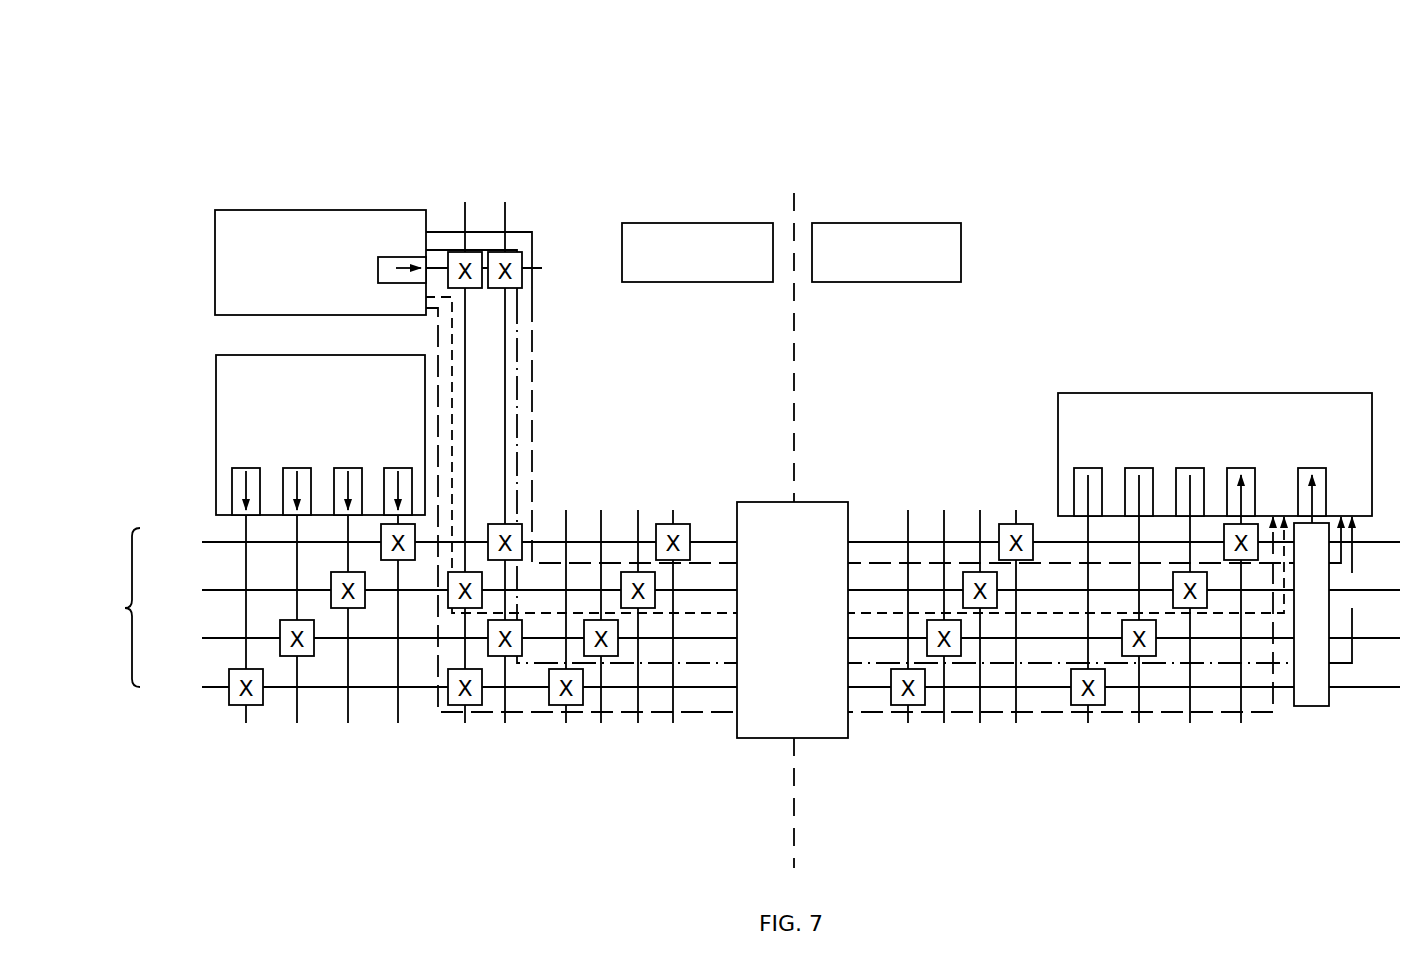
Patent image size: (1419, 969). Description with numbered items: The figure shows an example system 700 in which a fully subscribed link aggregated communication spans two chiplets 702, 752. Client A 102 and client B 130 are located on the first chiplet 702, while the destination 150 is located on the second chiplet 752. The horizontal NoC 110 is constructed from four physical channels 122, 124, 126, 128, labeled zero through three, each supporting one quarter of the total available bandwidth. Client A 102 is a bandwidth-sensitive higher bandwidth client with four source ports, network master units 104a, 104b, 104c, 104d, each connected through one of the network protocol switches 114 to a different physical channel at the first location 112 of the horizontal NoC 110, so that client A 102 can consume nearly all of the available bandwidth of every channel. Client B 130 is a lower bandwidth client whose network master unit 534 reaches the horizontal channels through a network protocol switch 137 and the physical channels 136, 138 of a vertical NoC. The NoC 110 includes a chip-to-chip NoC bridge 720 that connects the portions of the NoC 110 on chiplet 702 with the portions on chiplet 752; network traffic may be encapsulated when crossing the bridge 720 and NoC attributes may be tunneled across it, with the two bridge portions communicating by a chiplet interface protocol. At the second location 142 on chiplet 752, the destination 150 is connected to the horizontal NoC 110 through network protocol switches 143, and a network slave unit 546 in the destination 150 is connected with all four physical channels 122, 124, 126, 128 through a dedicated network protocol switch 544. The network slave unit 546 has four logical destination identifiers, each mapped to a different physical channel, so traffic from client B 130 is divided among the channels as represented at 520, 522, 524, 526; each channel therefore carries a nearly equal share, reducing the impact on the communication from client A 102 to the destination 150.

The system 700 is at (230, 68).
The chiplet 702 is at (265, 148).
The chiplet 752 is at (935, 148).
The client B 130 is at (388, 209).
The network master unit 534 is at (378, 267).
The physical channel 136 is at (465, 208).
The physical channel 138 is at (506, 208).
The network protocol switch 137 is at (470, 288).
The traffic 520 is at (452, 330).
The traffic 522 is at (438, 697).
The traffic 524 is at (532, 428).
The traffic 526 is at (517, 463).
The client A 102 is at (216, 383).
The network master unit 104a is at (246, 468).
The network master unit 104b is at (297, 468).
The network master unit 104c is at (346, 468).
The network master unit 104d is at (398, 468).
The horizontal NoC 110 is at (110, 607).
The physical channel 122 is at (222, 545).
The physical channel 124 is at (222, 593).
The physical channel 126 is at (222, 641).
The physical channel 128 is at (222, 690).
The network protocol switches 114 is at (398, 560).
The first location 112 is at (462, 815).
The chip-to-chip NoC bridge 720 is at (752, 738).
The second location 142 is at (903, 812).
The network protocol switches 143 is at (1190, 608).
The destination 150 is at (1212, 393).
The network slave unit 546 is at (1318, 468).
The network protocol switch 544 is at (1311, 706).